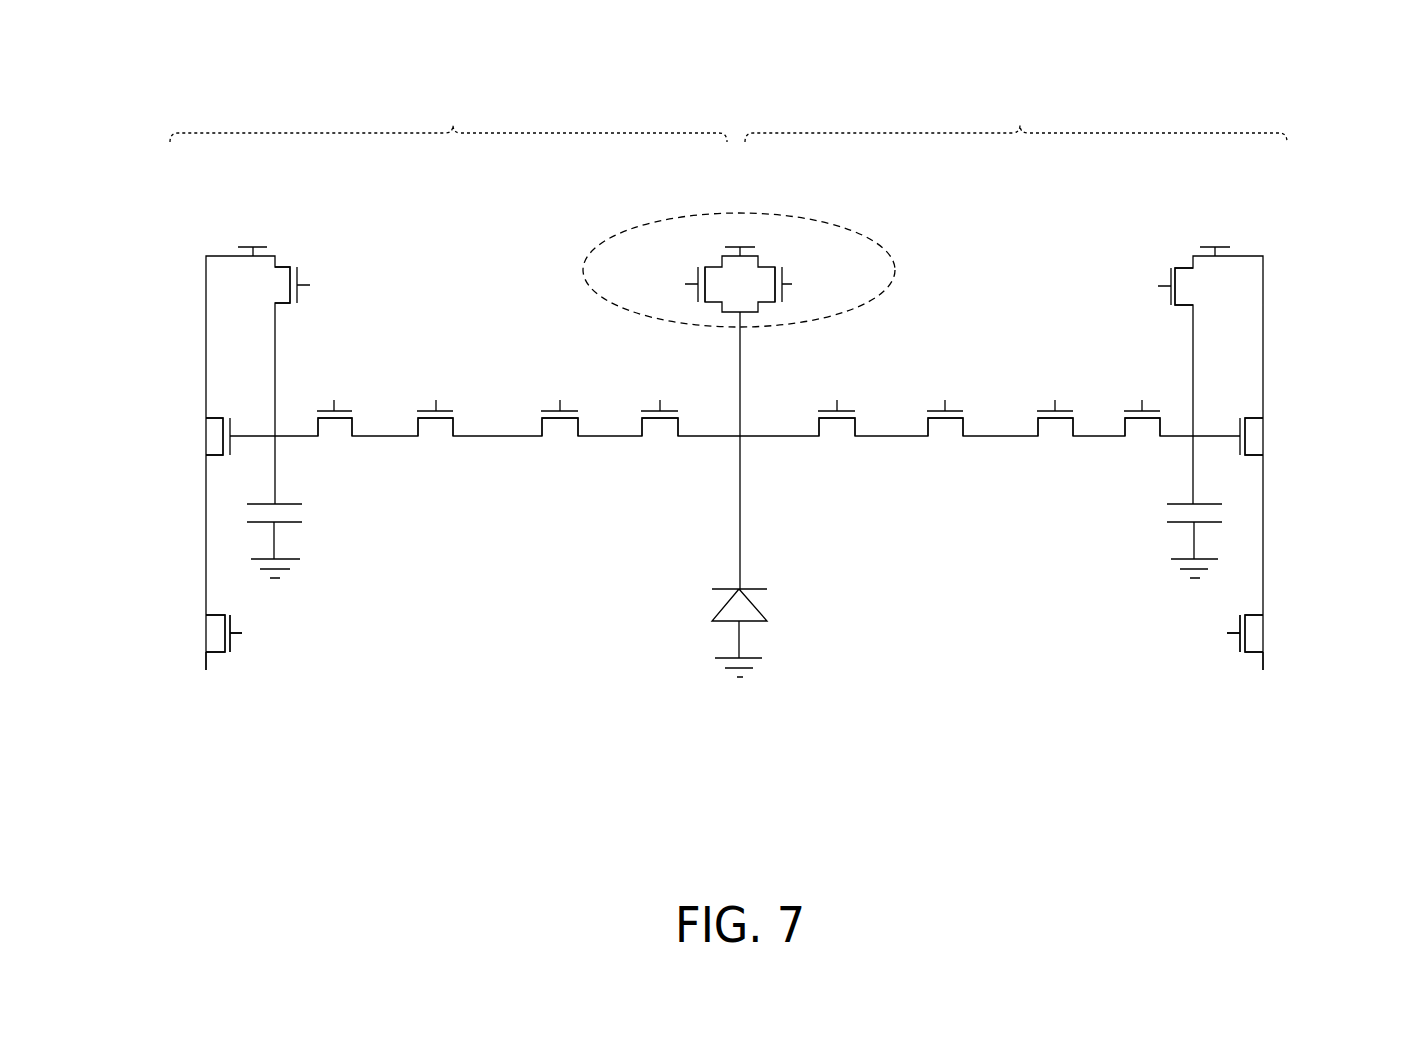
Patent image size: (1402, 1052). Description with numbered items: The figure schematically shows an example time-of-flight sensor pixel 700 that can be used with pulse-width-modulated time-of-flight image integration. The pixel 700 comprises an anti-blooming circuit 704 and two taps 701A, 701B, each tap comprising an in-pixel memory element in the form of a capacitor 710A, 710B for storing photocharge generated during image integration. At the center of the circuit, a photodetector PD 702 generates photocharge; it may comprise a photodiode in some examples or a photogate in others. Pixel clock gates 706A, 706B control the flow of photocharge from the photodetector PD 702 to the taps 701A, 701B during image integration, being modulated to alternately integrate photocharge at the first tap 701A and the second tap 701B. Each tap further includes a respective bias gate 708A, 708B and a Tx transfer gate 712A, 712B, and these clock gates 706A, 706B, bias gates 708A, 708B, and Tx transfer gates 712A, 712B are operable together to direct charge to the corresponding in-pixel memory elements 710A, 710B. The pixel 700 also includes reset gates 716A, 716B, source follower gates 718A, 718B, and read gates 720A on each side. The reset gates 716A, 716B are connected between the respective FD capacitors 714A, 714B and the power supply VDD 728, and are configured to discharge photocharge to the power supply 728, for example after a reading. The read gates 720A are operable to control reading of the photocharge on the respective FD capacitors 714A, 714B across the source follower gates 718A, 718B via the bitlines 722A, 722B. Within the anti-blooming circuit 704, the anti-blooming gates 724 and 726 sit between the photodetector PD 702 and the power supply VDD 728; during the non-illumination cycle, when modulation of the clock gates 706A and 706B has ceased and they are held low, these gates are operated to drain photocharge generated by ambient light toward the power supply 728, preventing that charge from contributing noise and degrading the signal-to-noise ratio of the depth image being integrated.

The sensor pixel 700 is at (197, 52).
The tap 701A is at (448, 118).
The tap 701B is at (1016, 118).
The photodetector PD 702 is at (747, 623).
The anti-blooming circuit 704 is at (808, 220).
The pixel clock gate 706A is at (655, 437).
The pixel clock gate 706B is at (837, 437).
The bias gate 708A is at (555, 437).
The bias gate 708B is at (937, 437).
The capacitor 710A is at (433, 437).
The capacitor 710B is at (1058, 437).
The Tx transfer gate 712A is at (327, 438).
The Tx transfer gate 712B is at (1143, 438).
The FD capacitor 714A is at (277, 525).
The FD capacitor 714B is at (1187, 525).
The reset gate 716A is at (280, 265).
The reset gate 716B is at (1183, 267).
The source follower gate 718A is at (208, 418).
The source follower gate 718B is at (1257, 418).
The read gate 720A is at (228, 652).
The bitline 722A is at (202, 665).
The bitline 722B is at (1267, 662).
The anti-blooming gate 724 is at (671, 284).
The anti-blooming gate 726 is at (807, 284).
The power supply VDD 728 is at (243, 215).